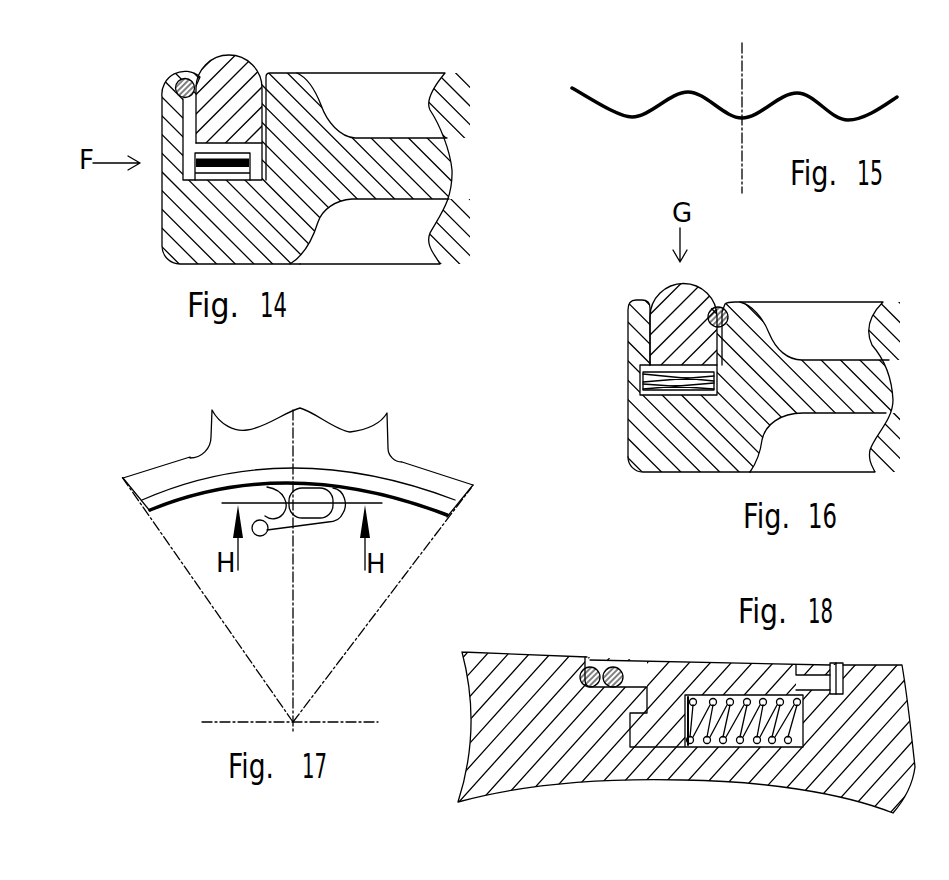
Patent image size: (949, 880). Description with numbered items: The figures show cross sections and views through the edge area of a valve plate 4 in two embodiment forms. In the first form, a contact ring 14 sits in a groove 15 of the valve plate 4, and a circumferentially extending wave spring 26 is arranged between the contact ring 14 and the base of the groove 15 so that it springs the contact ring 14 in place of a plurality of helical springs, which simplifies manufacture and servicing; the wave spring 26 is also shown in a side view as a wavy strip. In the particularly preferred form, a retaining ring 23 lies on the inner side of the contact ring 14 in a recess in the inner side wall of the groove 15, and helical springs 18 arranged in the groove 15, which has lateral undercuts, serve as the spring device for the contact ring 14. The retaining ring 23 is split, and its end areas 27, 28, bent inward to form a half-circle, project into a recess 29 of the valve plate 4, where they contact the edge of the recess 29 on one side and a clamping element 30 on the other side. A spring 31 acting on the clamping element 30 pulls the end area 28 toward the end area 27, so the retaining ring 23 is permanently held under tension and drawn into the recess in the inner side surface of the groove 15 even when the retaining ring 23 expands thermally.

In FIG. 14, the valve plate 4 is at (395, 182).
In FIG. 16, the valve plate 4 is at (813, 373).
In FIG. 17, the valve plate 4 is at (185, 543).
In FIG. 18, the valve plate 4 is at (510, 668).
In FIG. 14, the contact ring 14 is at (185, 143).
In FIG. 16, the contact ring 14 is at (663, 322).
In FIG. 17, the contact ring 14 is at (173, 491).
In FIG. 14, the groove 15 is at (188, 163).
In FIG. 16, the groove 15 is at (710, 392).
In FIG. 16, the helical springs 18 is at (680, 385).
In FIG. 14, the retaining ring 23 is at (180, 93).
In FIG. 16, the retaining ring 23 is at (725, 302).
In FIG. 17, the retaining ring 23 is at (425, 508).
In FIG. 14, the wave spring 26 is at (203, 168).
In FIG. 15, the wave spring 26 is at (630, 119).
In FIG. 17, the end area 27 is at (279, 497).
In FIG. 18, the end area 27 is at (594, 667).
In FIG. 17, the end area 28 is at (291, 499).
In FIG. 18, the end area 28 is at (616, 667).
In FIG. 17, the recess 29 is at (272, 527).
In FIG. 17, the clamping element 30 is at (318, 498).
In FIG. 18, the clamping element 30 is at (655, 735).
In FIG. 18, the spring 31 is at (738, 737).